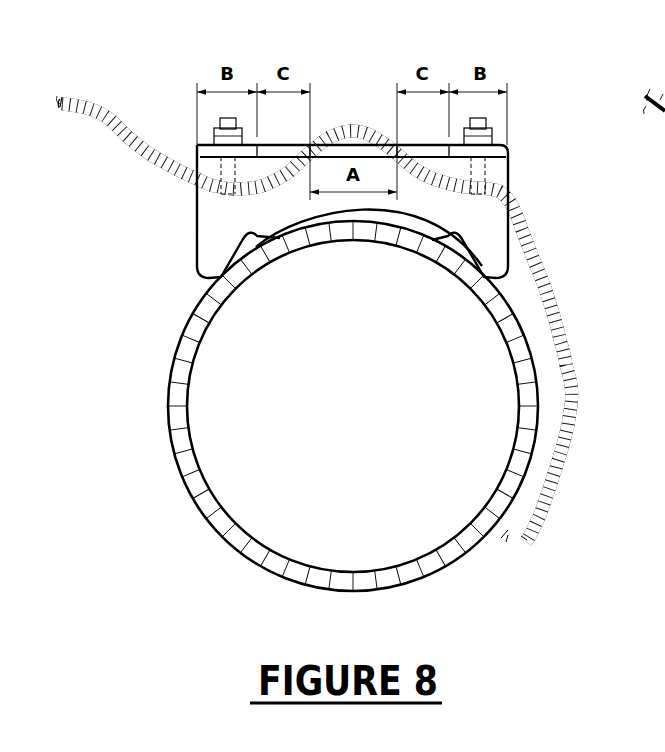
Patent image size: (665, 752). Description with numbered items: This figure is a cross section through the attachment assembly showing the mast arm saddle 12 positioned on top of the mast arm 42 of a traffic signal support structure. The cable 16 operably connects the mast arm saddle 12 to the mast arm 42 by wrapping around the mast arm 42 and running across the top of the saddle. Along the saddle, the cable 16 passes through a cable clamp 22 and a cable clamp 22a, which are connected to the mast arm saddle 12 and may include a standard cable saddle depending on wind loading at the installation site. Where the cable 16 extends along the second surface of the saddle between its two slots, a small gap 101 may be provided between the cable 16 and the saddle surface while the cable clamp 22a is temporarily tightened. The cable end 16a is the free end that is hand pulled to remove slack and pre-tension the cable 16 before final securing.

The mast arm saddle 12 is at (509, 170).
The cable 16 is at (572, 375).
The cable end 16a is at (121, 118).
The cable clamp 22 is at (480, 135).
The cable clamp 22a is at (228, 134).
The mast arm 42 is at (198, 322).
The small gap 101 is at (355, 140).